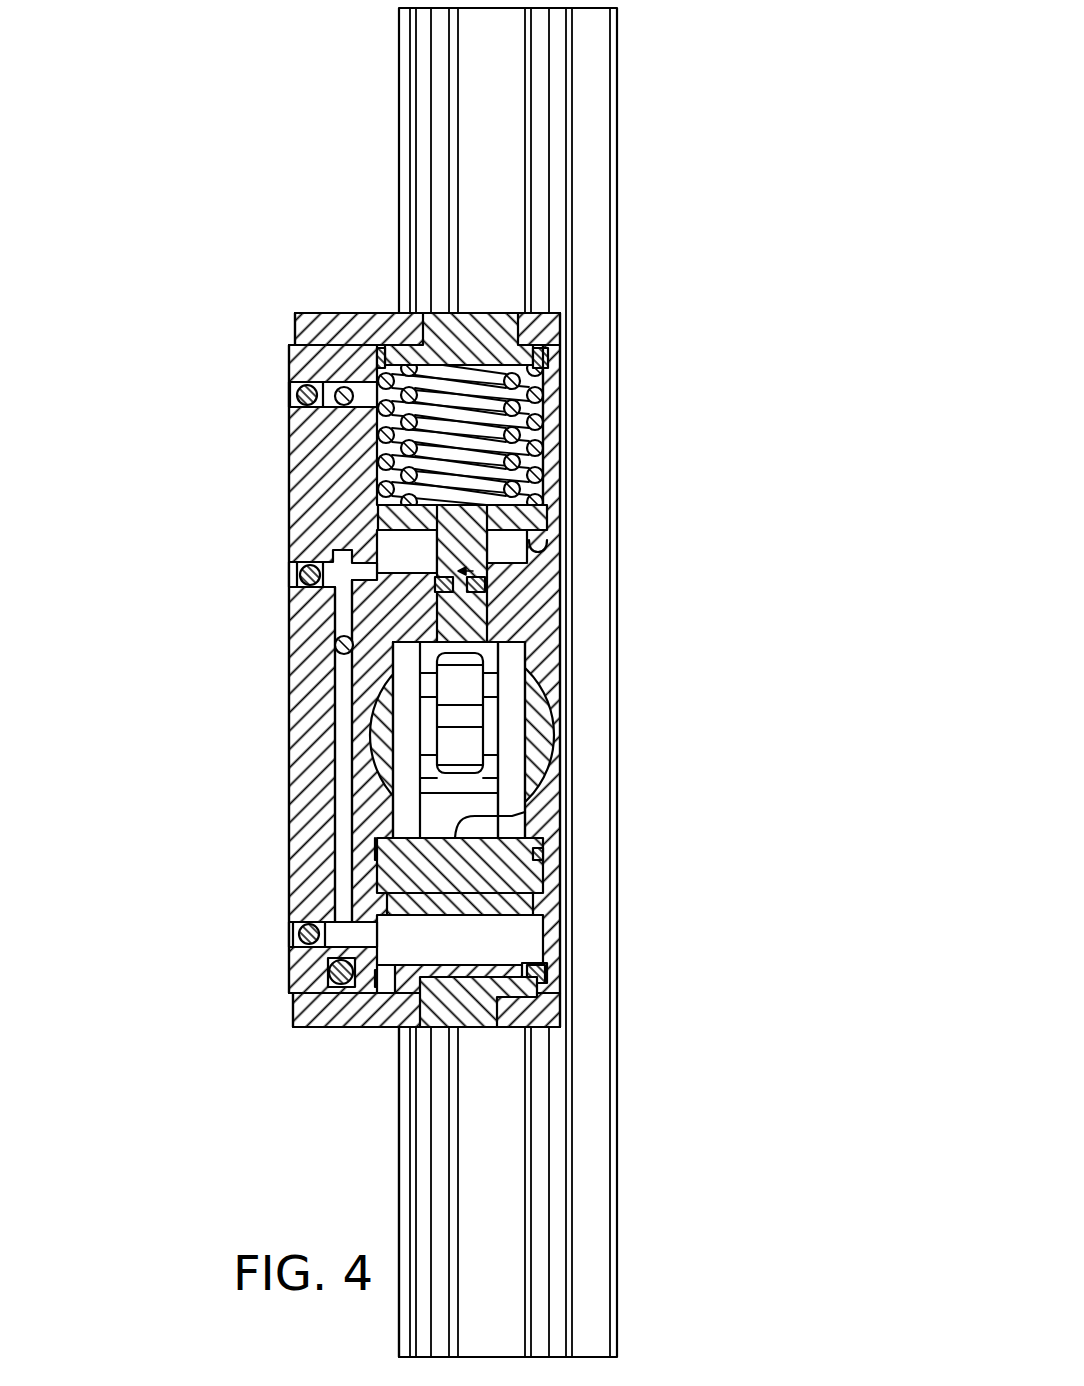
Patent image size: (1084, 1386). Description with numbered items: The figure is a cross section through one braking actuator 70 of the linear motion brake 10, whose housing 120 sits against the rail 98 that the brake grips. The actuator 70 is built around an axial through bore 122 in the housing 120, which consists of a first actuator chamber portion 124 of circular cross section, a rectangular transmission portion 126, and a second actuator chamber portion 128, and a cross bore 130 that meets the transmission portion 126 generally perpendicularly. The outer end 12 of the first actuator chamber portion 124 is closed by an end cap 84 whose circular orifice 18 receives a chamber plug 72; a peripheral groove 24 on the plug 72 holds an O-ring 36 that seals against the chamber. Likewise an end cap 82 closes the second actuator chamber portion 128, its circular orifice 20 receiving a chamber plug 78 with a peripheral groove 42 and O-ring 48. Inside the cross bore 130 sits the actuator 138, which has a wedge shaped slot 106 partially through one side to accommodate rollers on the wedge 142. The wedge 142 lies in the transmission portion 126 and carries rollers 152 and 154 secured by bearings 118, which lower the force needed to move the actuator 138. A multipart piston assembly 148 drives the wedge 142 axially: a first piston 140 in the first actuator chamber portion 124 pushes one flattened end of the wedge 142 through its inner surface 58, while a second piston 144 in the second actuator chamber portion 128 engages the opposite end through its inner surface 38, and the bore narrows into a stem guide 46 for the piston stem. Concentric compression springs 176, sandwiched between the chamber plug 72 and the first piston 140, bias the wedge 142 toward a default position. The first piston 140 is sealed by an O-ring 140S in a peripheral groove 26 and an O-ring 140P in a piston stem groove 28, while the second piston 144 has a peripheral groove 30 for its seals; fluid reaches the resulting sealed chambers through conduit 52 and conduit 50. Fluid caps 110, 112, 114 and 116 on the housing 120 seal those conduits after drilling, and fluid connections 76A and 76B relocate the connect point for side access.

The brake 10 is at (240, 1028).
The outer end of first actuator chamber portion 12 is at (557, 343).
The circular orifice 18 is at (425, 318).
The circular orifice 20 is at (440, 1033).
The peripheral groove 24 is at (373, 385).
The peripheral groove 26 is at (380, 512).
The piston stem groove 28 is at (435, 588).
The peripheral groove 30 is at (375, 858).
The O-ring 36 is at (548, 357).
The inner surface 38 is at (500, 826).
The peripheral groove 42 is at (540, 997).
The stem guide 46 is at (338, 647).
The O-ring 48 is at (537, 980).
The conduit 50 is at (345, 902).
The conduit 52 is at (367, 400).
The inner surface 58 is at (490, 659).
The braking actuator 70 is at (476, 1040).
The chamber plug 72 is at (493, 316).
The fluid connection 76A is at (338, 388).
The fluid connection 76B is at (388, 655).
The chamber plug 78 is at (457, 997).
The end cap 82 is at (310, 1015).
The end cap 84 is at (345, 337).
The rail 98 is at (583, 72).
The wedge shaped slot 106 is at (420, 782).
The fluid cap 110 is at (296, 395).
The fluid cap 112 is at (300, 580).
The fluid cap 114 is at (295, 937).
The fluid cap 116 is at (343, 992).
The bearing 118 is at (500, 740).
The housing 120 is at (323, 468).
The axial through bore 122 is at (537, 545).
The first actuator chamber portion 124 is at (548, 393).
The transmission portion 126 is at (393, 662).
The second actuator chamber portion 128 is at (465, 929).
The cross bore 130 is at (492, 706).
The actuator 138 is at (527, 775).
The first piston 140 is at (545, 512).
The O-ring 140P is at (478, 584).
The O-ring 140S is at (375, 493).
The wedge 142 is at (490, 838).
The second piston 144 is at (493, 877).
The multipart piston assembly 148 is at (475, 567).
The roller 152 is at (458, 752).
The roller 154 is at (468, 686).
The concentric compression spring 176 is at (545, 420).